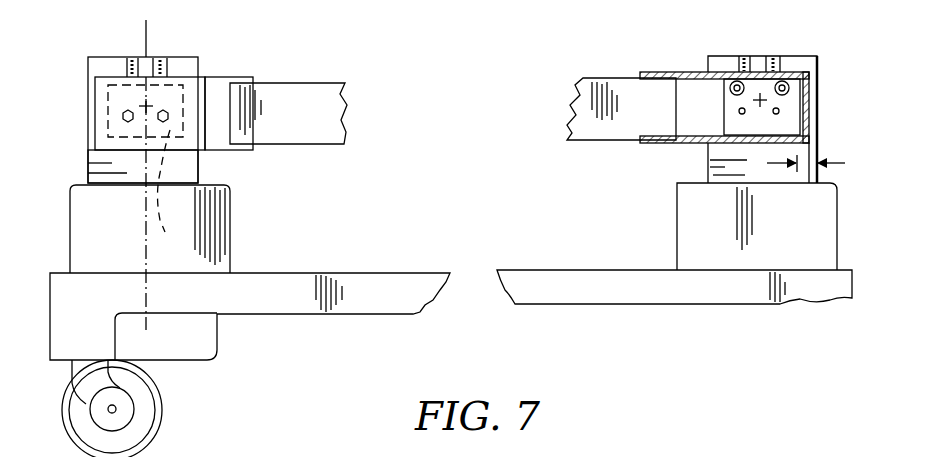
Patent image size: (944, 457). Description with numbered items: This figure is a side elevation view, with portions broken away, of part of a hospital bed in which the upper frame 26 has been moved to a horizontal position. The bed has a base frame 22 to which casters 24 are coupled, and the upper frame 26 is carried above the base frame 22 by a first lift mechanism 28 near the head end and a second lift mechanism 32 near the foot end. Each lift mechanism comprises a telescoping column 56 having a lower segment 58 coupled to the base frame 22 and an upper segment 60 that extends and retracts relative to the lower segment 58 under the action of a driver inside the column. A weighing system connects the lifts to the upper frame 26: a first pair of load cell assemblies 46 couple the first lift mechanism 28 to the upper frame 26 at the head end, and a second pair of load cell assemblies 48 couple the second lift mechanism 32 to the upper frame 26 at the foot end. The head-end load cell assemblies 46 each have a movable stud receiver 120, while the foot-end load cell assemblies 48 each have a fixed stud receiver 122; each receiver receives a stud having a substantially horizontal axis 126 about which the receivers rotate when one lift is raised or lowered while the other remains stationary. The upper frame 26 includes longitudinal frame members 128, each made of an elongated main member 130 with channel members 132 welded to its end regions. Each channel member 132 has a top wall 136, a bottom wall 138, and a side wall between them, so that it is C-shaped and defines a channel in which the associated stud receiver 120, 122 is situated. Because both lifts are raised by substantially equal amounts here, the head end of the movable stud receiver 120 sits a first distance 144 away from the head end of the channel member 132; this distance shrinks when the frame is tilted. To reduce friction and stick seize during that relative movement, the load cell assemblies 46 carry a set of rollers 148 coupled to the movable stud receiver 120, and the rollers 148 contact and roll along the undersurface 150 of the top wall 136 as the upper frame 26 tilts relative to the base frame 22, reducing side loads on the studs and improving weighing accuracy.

The base frame 22 is at (625, 311).
The casters 24 is at (157, 399).
The upper frame 26 is at (329, 151).
The first lift mechanism 28 is at (657, 193).
The second lift mechanism 32 is at (239, 230).
The first pair of load cell assemblies 46 is at (692, 100).
The second pair of load cell assemblies 48 is at (165, 100).
The telescoping column 56 is at (180, 217).
The lower segment 58 is at (209, 332).
The upper segment 60 is at (185, 170).
The movable stud receiver 120 is at (734, 112).
The fixed stud receiver 122 is at (181, 195).
The horizontal axis 126 is at (146, 106).
The longitudinal frame members 128 is at (562, 126).
The elongated main member 130 is at (330, 110).
The channel members 132 is at (129, 153).
The top wall 136 is at (708, 54).
The bottom wall 138 is at (763, 143).
The first distance 144 is at (843, 163).
The rollers 148 is at (735, 78).
The undersurface 150 is at (812, 90).